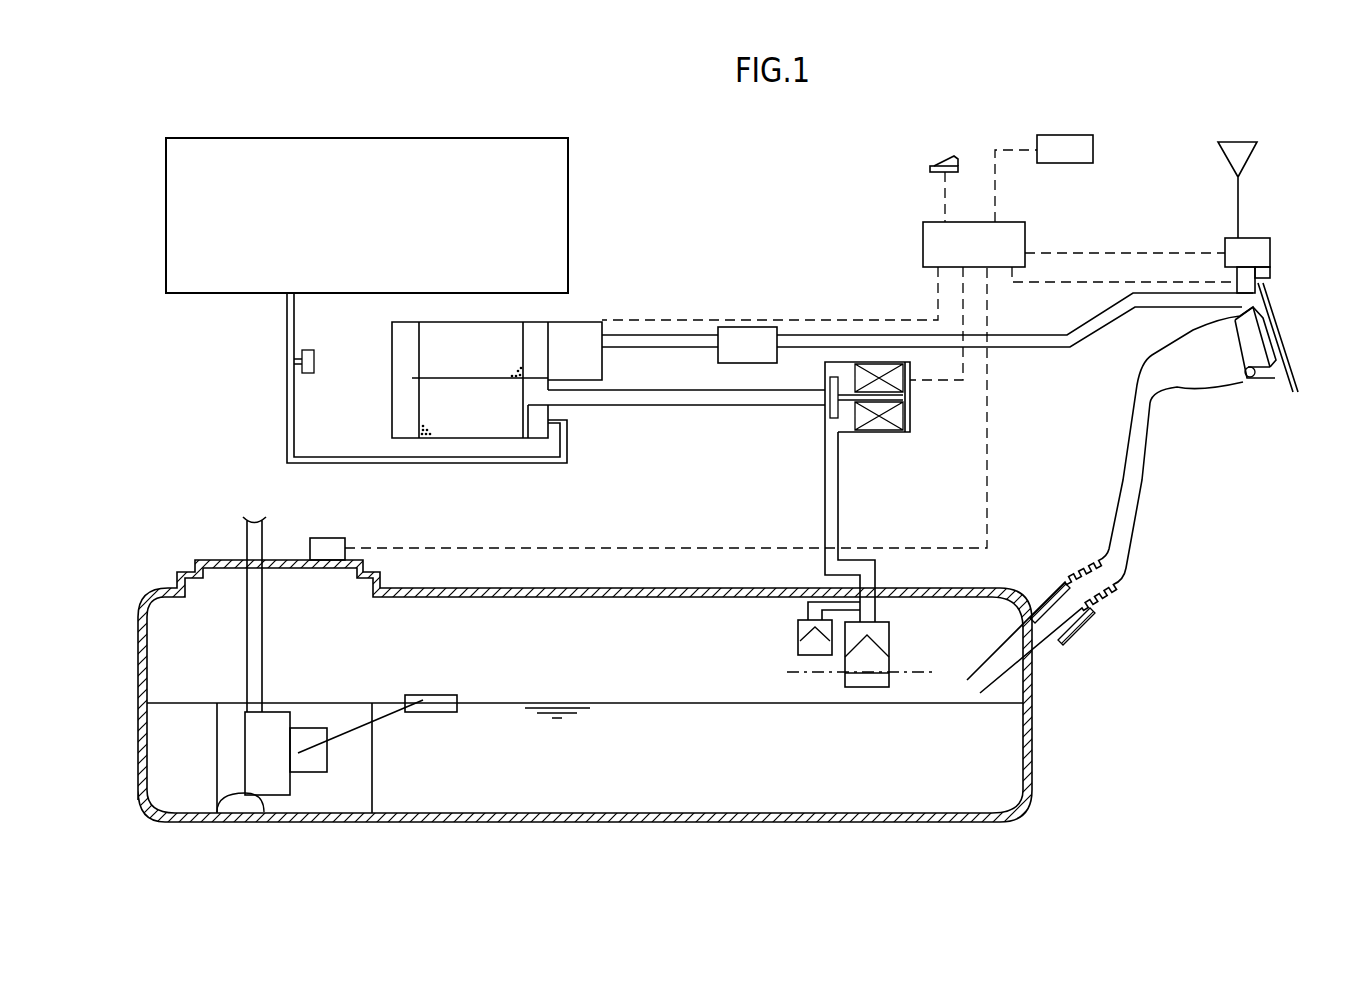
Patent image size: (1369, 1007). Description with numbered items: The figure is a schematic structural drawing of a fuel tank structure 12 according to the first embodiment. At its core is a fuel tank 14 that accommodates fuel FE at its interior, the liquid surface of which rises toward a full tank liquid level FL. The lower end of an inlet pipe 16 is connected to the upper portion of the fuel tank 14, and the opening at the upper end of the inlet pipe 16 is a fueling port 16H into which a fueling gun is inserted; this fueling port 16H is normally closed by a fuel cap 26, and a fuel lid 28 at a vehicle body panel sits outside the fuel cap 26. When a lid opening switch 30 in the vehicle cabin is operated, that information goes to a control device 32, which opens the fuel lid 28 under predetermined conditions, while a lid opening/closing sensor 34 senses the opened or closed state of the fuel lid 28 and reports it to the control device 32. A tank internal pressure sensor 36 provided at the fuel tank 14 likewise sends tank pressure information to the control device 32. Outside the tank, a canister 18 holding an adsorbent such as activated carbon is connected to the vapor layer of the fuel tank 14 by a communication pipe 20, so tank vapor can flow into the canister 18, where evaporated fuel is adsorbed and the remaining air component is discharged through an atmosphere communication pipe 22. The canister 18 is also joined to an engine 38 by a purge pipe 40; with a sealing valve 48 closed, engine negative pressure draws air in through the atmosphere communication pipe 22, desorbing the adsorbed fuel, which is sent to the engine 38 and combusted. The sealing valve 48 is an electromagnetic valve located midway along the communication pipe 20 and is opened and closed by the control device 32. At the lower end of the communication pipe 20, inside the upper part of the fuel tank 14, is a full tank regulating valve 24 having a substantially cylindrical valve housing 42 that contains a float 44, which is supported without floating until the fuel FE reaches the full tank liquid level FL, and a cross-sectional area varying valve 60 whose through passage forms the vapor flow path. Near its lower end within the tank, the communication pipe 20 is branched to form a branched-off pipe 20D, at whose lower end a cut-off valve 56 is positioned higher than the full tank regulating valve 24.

The fuel tank structure 12 is at (1100, 688).
The fuel tank 14 is at (1035, 798).
The inlet pipe 16 is at (1148, 455).
The fueling port 16H is at (1254, 377).
The canister 18 is at (390, 407).
The communication pipe 20 is at (838, 482).
The branched-off pipe 20D is at (808, 605).
The atmosphere communication pipe 22 is at (1047, 348).
The full tank regulating valve 24 is at (901, 657).
The fuel cap 26 is at (1262, 370).
The fuel lid 28 is at (1292, 368).
The lid opening switch 30 is at (936, 165).
The control device 32 is at (1025, 232).
The lid opening/closing sensor 34 is at (1257, 283).
The tank internal pressure sensor 36 is at (333, 538).
The engine 38 is at (568, 213).
The purge pipe 40 is at (286, 432).
The valve housing 42 is at (889, 630).
The float 44 is at (880, 643).
The sealing valve 48 is at (913, 418).
The cut-off valve 56 is at (798, 630).
The cross-sectional area varying valve 60 is at (867, 690).
The fuel FE is at (634, 716).
The full tank liquid level FL is at (787, 671).